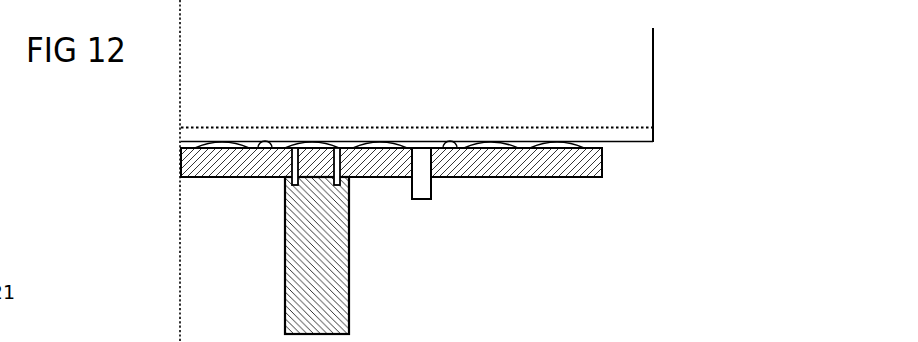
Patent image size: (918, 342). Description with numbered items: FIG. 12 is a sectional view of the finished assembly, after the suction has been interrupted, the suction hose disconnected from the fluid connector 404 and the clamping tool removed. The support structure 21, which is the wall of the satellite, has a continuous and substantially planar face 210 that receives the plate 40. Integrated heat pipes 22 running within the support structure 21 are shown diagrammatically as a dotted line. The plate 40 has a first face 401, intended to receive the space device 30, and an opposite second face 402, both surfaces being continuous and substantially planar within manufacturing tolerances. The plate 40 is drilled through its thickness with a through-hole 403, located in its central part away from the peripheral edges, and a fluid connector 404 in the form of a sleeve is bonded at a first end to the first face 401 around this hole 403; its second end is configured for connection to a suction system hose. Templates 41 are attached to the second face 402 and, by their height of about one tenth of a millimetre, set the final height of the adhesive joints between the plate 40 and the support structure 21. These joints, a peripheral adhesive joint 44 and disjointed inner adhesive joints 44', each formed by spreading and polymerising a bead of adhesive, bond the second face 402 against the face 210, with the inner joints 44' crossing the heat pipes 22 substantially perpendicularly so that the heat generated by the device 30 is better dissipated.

The support structure 21 is at (655, 92).
The integrated heat pipes 22 is at (626, 132).
The face of the support structure 210 is at (610, 143).
The space device 30 is at (347, 264).
The plate 40 is at (186, 164).
The first face of the plate 401 is at (563, 178).
The second face of the plate 402 is at (252, 148).
The through-hole 403 is at (423, 157).
The fluid connector 404 is at (431, 188).
The templates 41 is at (451, 142).
The peripheral adhesive joint 44 is at (557, 111).
The inner adhesive joints 44' is at (401, 123).